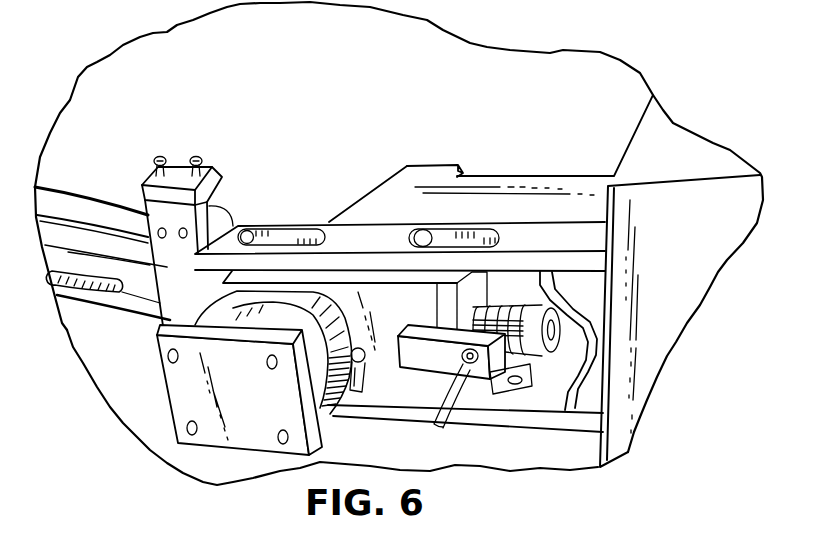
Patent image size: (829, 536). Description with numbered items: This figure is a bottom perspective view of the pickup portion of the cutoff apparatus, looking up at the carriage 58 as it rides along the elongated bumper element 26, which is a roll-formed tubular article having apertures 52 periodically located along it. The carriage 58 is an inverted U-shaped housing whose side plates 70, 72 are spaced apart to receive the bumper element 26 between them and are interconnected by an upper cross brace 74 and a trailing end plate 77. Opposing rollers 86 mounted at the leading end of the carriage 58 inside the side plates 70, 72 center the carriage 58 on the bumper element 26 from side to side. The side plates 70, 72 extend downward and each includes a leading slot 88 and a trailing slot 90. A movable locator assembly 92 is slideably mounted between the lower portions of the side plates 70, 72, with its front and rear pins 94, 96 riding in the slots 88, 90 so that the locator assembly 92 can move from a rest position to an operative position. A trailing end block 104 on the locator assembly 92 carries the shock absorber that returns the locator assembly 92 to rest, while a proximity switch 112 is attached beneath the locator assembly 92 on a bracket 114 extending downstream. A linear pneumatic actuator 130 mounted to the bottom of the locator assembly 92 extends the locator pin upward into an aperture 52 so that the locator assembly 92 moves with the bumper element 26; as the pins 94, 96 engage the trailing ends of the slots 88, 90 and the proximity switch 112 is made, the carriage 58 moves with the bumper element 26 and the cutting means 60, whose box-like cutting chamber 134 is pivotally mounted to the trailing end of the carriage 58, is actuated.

The bumper element 26 is at (92, 230).
The aperture 52 is at (70, 267).
The carriage 58 is at (332, 123).
The cutting means 60 is at (700, 130).
The side plate 70 is at (491, 158).
The side plate 72 is at (559, 433).
The upper cross brace 74 is at (436, 166).
The trailing end plate 77 is at (565, 292).
The opposing rollers 86 is at (230, 190).
The leading slot 88 is at (299, 235).
The trailing slot 90 is at (477, 232).
The locator assembly 92 is at (400, 302).
The front pins 94 is at (246, 237).
The rear pins 96 is at (423, 233).
The trailing end block 104 is at (446, 305).
The proximity switch 112 is at (457, 363).
The bracket 114 is at (397, 370).
The linear pneumatic actuator 130 is at (170, 402).
The cutting chamber 134 is at (708, 219).